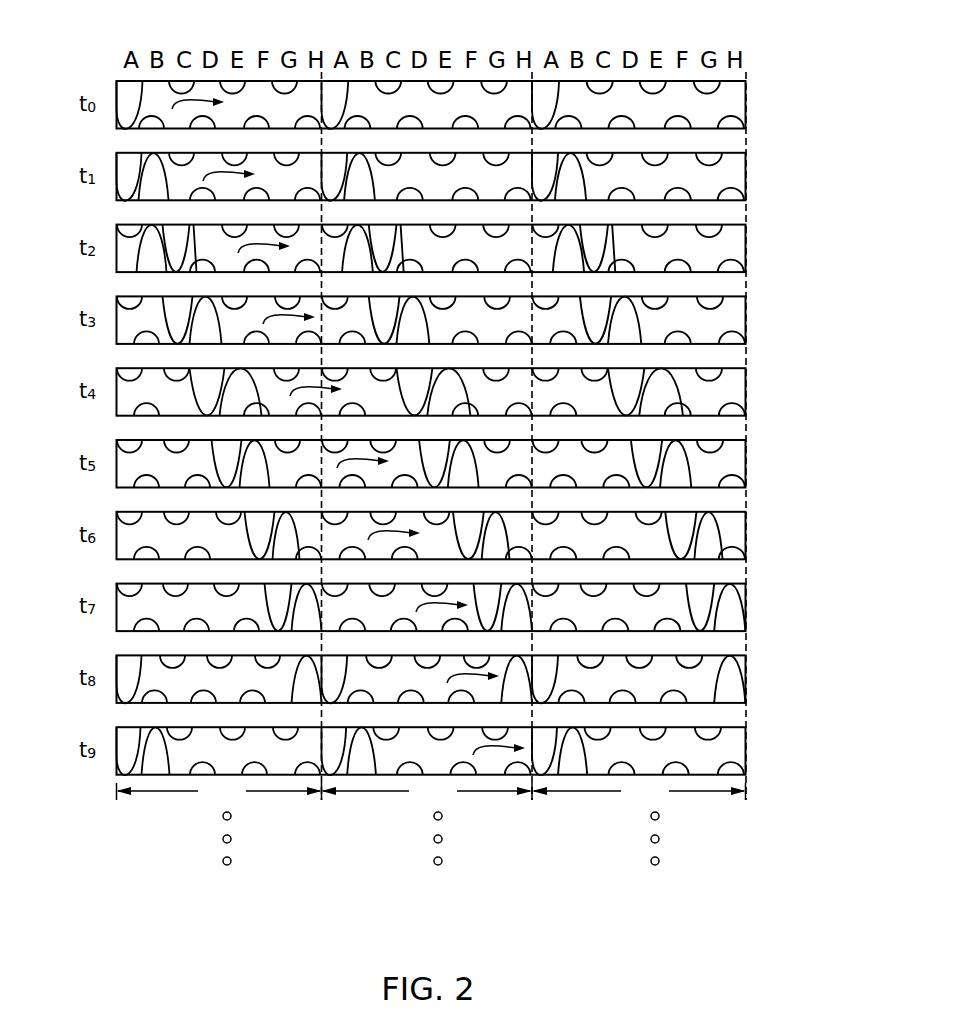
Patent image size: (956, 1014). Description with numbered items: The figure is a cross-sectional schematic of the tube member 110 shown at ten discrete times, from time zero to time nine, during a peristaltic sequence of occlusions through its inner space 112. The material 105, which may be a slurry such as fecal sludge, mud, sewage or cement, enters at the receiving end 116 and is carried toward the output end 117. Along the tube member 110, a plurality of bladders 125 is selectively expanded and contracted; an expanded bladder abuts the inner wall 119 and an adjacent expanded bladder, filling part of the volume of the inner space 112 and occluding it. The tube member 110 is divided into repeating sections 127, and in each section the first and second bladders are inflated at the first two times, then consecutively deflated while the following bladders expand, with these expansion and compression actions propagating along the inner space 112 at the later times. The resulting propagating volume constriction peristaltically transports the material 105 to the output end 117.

The material 105 is at (421, 82).
The tube member 110 is at (756, 90).
The inner space 112 is at (687, 111).
The receiving end 116 is at (113, 190).
The output end 117 is at (748, 178).
The inner wall 119 is at (710, 267).
The bladders 125 is at (123, 116).
The repeating sections 127 is at (431, 791).